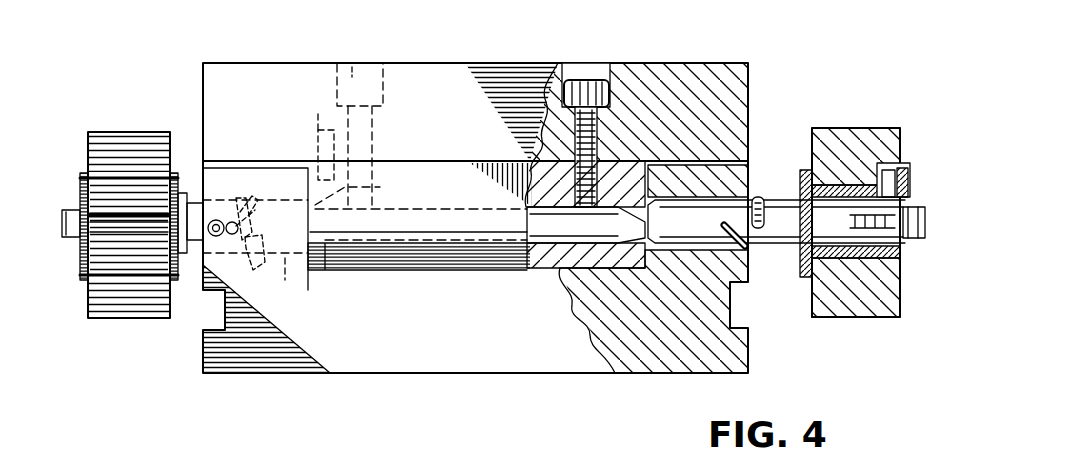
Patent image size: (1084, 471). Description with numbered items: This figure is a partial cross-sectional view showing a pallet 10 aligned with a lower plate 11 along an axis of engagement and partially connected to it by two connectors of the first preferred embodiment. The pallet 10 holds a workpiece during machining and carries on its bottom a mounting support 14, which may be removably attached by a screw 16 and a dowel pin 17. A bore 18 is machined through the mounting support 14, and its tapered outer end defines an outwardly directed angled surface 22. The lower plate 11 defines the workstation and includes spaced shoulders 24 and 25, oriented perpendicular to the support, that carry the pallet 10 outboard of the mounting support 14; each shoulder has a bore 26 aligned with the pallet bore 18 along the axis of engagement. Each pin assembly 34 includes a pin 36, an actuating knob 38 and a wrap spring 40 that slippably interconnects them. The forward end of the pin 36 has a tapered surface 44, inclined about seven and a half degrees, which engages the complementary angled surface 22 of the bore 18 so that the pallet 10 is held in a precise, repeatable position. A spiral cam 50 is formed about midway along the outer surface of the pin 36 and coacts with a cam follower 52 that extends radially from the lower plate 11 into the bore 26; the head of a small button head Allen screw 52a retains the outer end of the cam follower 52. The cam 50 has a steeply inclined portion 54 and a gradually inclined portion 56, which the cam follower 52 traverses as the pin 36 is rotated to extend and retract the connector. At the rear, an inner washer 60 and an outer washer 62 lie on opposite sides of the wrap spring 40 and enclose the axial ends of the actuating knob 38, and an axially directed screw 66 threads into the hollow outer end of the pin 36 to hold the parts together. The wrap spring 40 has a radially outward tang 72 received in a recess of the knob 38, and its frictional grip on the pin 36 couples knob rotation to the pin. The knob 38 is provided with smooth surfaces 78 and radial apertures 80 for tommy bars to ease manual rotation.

The pallet 10 is at (263, 59).
The lower plate 11 is at (328, 380).
The mounting support 14 is at (445, 264).
The screw 16 is at (360, 63).
The dowel pin 17 is at (314, 136).
The bore 18 is at (438, 205).
The angled surface 22 is at (326, 250).
The shoulder 24 is at (255, 170).
The shoulder 25 is at (749, 160).
The bore 26 is at (287, 258).
The pin assembly 34 is at (123, 334).
The pin 36 is at (182, 256).
The actuating knob 38 is at (132, 148).
The wrap spring 40 is at (858, 185).
The tapered surface 44 is at (665, 283).
The spiral cam 50 is at (242, 204).
The cam follower 52 is at (243, 232).
The screw 52a is at (176, 236).
The steeply inclined portion 54 is at (252, 210).
The gradually inclined portion 56 is at (250, 258).
The inner washer 60 is at (178, 172).
The outer washer 62 is at (82, 282).
The screw 66 is at (68, 210).
The tang 72 is at (898, 164).
The smooth surface 78 is at (153, 318).
The aperture 80 is at (128, 213).